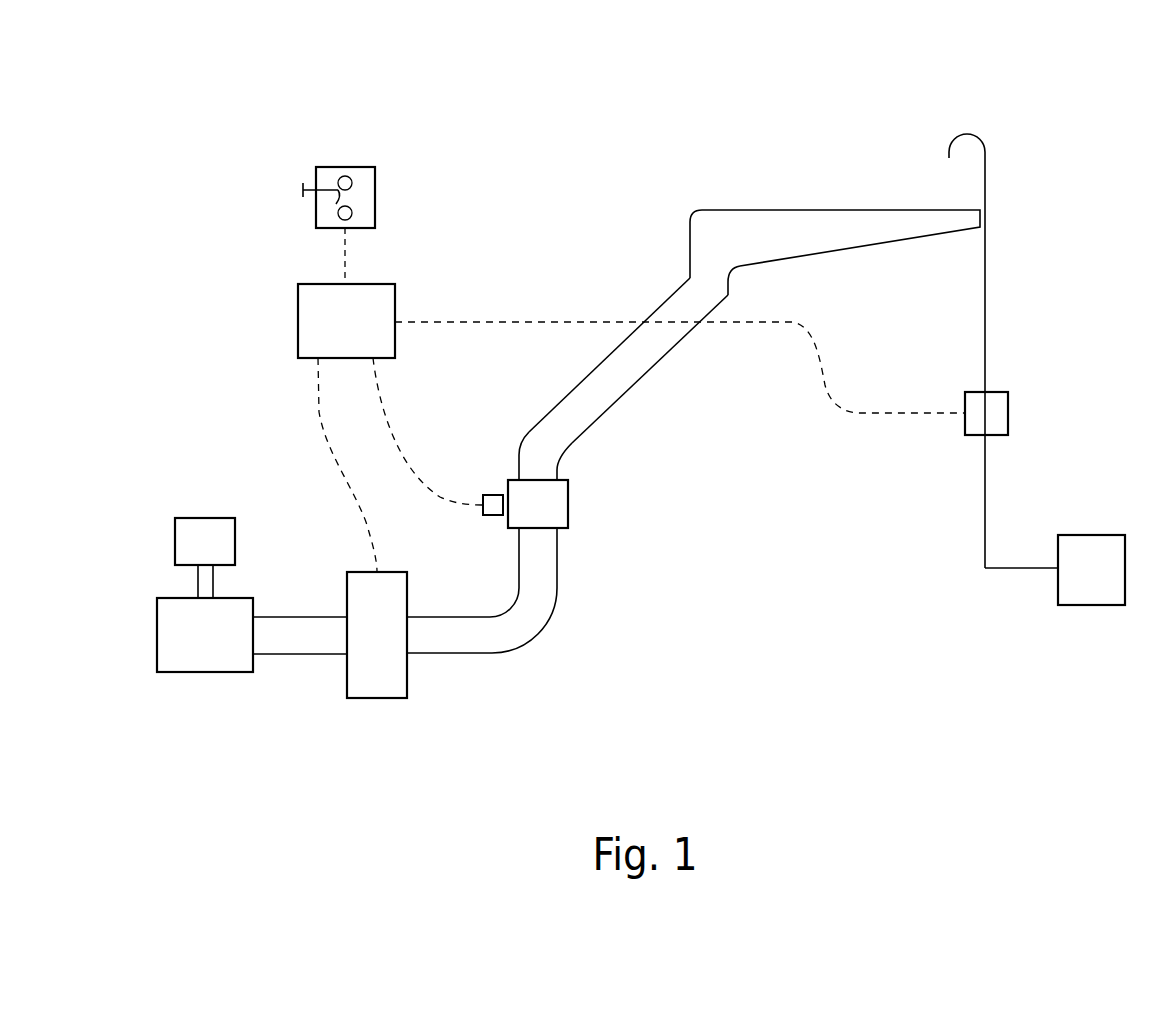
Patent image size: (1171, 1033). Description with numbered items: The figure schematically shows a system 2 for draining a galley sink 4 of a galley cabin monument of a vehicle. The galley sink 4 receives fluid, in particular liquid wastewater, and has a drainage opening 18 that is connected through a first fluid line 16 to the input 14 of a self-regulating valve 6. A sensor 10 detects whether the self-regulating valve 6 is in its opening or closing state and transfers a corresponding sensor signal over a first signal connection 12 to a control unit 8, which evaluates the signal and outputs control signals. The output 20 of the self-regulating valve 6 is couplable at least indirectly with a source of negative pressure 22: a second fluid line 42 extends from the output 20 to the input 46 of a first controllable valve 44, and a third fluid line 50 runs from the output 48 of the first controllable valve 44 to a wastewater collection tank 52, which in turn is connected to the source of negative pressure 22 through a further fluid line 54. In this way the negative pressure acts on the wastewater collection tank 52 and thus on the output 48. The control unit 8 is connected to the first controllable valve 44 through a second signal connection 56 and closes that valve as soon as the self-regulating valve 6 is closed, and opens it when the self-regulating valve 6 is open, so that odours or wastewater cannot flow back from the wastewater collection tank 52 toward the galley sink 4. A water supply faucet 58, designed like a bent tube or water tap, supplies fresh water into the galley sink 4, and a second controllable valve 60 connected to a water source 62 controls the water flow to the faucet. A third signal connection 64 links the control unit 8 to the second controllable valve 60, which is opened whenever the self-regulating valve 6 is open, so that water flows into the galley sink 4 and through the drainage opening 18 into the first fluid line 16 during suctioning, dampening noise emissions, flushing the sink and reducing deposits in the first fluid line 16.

The system 2 is at (1040, 96).
The galley sink 4 is at (780, 192).
The self-regulating valve 6 is at (578, 505).
The control unit 8 is at (405, 271).
The sensor 10 is at (492, 493).
The first signal connection 12 is at (392, 413).
The input 14 is at (571, 474).
The first fluid line 16 is at (660, 372).
The drainage opening 18 is at (705, 284).
The output 20 is at (571, 540).
The source of negative pressure 22 is at (213, 516).
The second fluid line 42 is at (500, 668).
The first controllable valve 44 is at (402, 705).
The input 46 is at (413, 665).
The output 48 is at (342, 601).
The third fluid line 50 is at (297, 666).
The wastewater collection tank 52 is at (205, 690).
The further fluid line 54 is at (225, 583).
The second signal connection 56 is at (314, 415).
The water supply faucet 58 is at (985, 128).
The second controllable valve 60 is at (1000, 388).
The water source 62 is at (1107, 530).
The third signal connection 64 is at (812, 321).